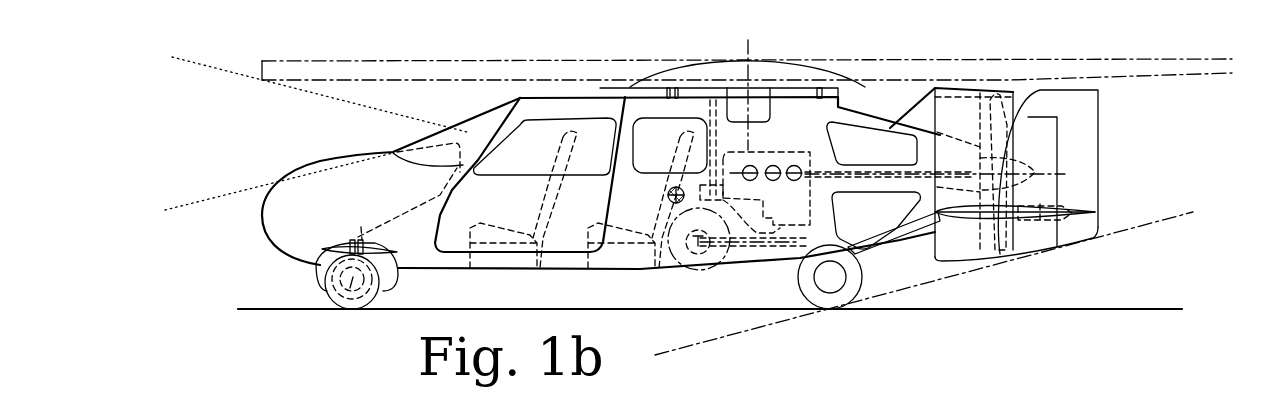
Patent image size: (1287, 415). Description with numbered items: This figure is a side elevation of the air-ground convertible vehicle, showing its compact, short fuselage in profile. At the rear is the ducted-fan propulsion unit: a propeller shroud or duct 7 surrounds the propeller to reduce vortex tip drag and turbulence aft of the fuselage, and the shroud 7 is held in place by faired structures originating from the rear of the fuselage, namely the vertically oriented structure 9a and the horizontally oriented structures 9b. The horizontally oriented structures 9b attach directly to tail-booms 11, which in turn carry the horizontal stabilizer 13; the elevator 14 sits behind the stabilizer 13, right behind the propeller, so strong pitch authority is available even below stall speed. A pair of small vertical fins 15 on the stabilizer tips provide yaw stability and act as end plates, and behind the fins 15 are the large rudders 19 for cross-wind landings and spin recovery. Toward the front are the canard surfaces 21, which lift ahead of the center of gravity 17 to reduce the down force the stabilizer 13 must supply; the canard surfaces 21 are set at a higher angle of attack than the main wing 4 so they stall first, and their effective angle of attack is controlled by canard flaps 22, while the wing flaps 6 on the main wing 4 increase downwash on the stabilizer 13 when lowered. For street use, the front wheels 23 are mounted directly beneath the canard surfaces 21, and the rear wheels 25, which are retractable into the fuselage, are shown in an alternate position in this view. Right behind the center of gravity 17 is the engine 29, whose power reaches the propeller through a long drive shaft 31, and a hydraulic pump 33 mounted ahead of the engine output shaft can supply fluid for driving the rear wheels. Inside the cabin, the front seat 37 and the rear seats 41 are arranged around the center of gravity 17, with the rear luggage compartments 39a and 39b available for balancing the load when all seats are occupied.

The main wing 4 is at (667, 75).
The wing flaps 6 is at (816, 82).
The vertically oriented faired structure 9a is at (928, 108).
The horizontally oriented faired structures 9b is at (928, 215).
The rear luggage compartment 39a is at (863, 224).
The rear luggage compartment 39b is at (845, 138).
The rudders 19 is at (1080, 142).
The propeller shroud or duct 7 is at (952, 250).
The tail-booms 11 is at (975, 258).
The horizontal stabilizer 13 is at (1022, 222).
The elevator 14 is at (1082, 227).
The vertical fins 15 is at (1042, 240).
The center of gravity 17 is at (672, 202).
The canard surfaces 21 is at (330, 258).
The canard flaps 22 is at (386, 246).
The front wheels 23 is at (348, 303).
The rear wheels 25 is at (852, 298).
The engine 29 is at (770, 228).
The drive shaft 31 is at (828, 190).
The hydraulic pump 33 is at (701, 252).
The front seat 37 is at (493, 256).
The rear seats 41 is at (605, 258).